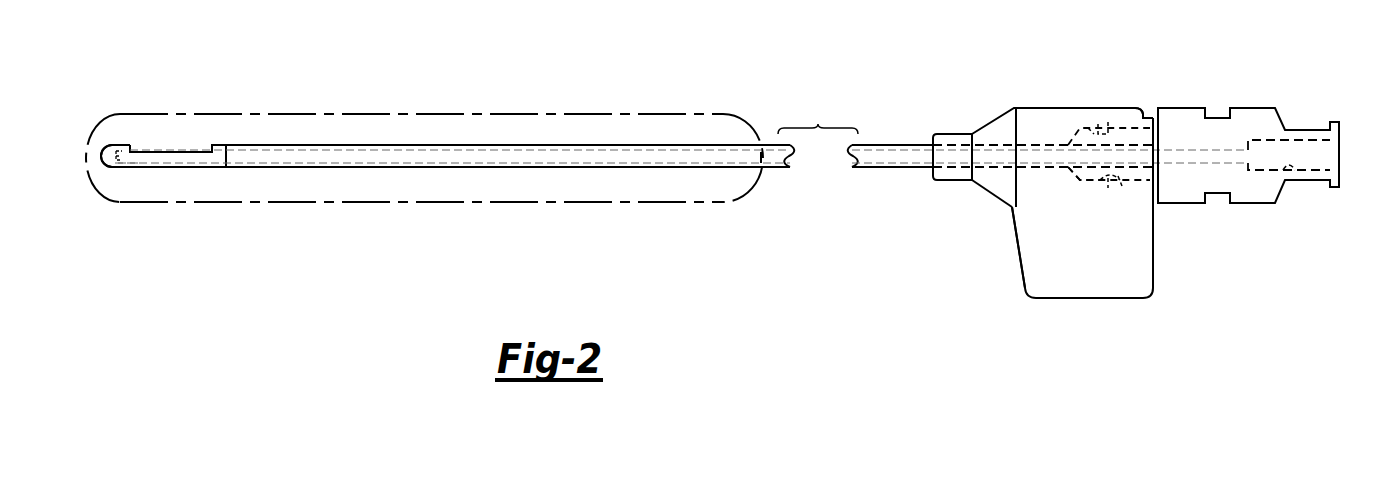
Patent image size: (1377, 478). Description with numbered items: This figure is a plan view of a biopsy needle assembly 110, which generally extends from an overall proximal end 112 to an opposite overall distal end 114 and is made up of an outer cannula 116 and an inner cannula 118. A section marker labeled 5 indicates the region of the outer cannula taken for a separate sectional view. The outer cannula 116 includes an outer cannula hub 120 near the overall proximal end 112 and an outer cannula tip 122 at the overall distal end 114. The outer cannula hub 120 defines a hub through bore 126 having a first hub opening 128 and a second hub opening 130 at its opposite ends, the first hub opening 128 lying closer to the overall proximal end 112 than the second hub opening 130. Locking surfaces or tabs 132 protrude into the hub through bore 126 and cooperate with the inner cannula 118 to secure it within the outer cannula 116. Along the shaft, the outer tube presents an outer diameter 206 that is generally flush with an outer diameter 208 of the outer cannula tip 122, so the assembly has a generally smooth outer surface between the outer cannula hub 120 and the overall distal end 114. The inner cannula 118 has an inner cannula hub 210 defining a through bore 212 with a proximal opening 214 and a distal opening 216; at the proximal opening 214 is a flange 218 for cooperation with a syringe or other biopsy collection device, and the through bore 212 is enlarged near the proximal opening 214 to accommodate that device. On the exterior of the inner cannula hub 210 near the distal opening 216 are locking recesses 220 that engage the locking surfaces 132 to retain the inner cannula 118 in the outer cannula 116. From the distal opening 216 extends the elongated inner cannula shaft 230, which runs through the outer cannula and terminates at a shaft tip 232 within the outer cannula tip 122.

The section line of FIG. 5 is at (323, 114).
The biopsy needle assembly 110 is at (712, 82).
The overall distal end 114 is at (113, 150).
The outer cannula tip 122 is at (112, 165).
The shaft tip 232 is at (125, 157).
The outer diameter of the outer cannula tip 208 is at (212, 168).
The outer diameter of the outer tube 206 is at (378, 168).
The inner cannula shaft 230 is at (905, 160).
The second hub opening 130 is at (931, 147).
The outer cannula 116 is at (1025, 108).
The outer cannula hub 120 is at (1025, 268).
The hub through bore 126 is at (1027, 170).
The first hub opening 128 is at (1145, 116).
The locking surfaces or tabs 132 is at (1084, 125).
The locking recesses 220 is at (1104, 120).
The distal opening 216 is at (1072, 183).
The inner cannula 118 is at (1255, 108).
The inner cannula hub 210 is at (1245, 122).
The overall proximal end 112 is at (1292, 130).
The through bore 212 is at (1283, 172).
The proximal opening 214 is at (1340, 126).
The flange 218 is at (1336, 188).